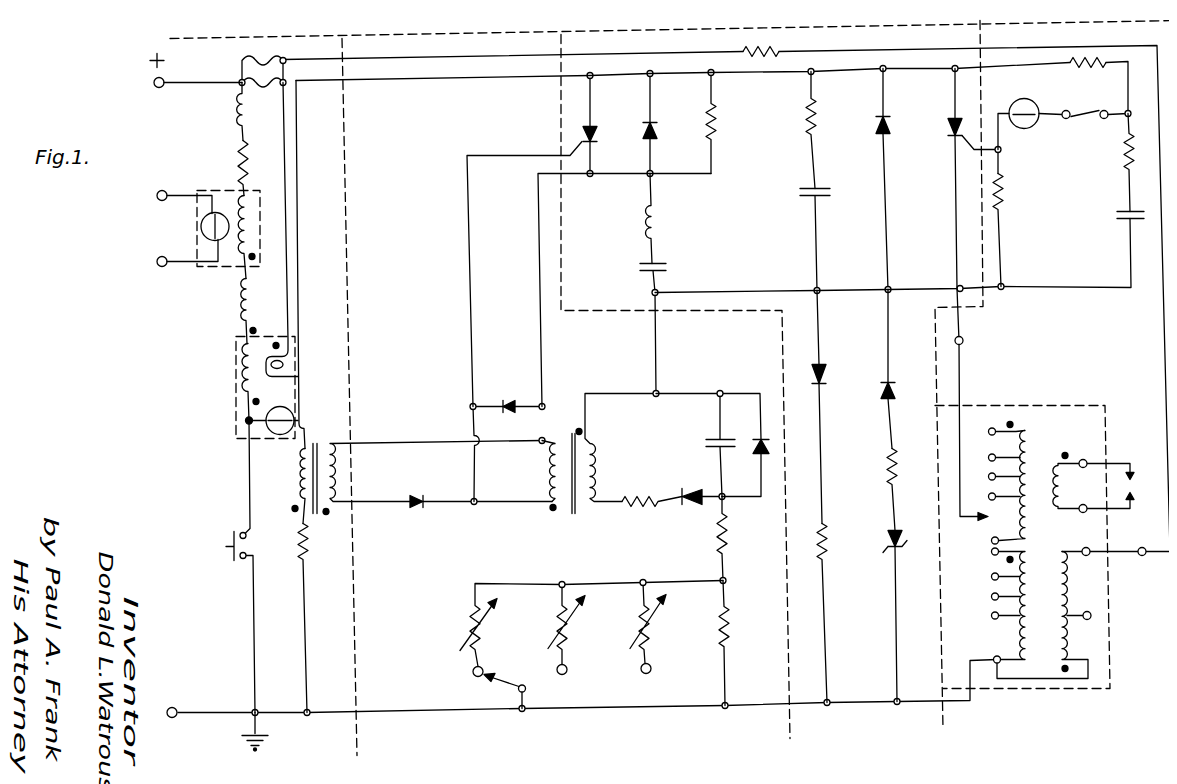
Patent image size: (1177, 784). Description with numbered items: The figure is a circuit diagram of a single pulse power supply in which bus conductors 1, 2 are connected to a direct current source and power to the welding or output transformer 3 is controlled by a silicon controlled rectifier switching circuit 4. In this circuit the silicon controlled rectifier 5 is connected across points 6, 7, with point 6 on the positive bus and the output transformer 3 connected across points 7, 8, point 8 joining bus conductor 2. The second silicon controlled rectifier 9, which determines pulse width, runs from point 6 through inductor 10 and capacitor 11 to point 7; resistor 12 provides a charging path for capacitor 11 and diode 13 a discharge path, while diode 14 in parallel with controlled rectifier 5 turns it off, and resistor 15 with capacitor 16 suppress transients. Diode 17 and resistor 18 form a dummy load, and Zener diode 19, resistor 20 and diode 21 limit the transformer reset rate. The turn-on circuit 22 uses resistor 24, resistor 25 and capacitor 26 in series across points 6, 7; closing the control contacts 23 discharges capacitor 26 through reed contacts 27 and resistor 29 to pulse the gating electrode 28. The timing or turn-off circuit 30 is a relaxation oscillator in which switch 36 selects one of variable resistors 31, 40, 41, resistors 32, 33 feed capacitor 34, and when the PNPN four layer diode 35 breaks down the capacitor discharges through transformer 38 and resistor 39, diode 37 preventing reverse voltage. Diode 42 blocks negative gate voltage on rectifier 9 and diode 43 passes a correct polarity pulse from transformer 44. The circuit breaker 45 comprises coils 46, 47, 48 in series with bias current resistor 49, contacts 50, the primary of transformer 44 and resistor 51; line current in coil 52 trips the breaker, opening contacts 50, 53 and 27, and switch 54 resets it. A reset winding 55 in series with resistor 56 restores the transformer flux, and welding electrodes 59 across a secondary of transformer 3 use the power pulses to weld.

The bus conductor 1 is at (153, 81).
The bus conductor 2 is at (177, 710).
The output transformer 3 is at (1032, 407).
The silicon controlled rectifier switching circuit 4 is at (688, 30).
The silicon controlled rectifier 5 is at (950, 134).
The point 6 is at (952, 68).
The point 7 is at (886, 289).
The point 8 is at (994, 658).
The second silicon controlled rectifier 9 is at (597, 139).
The inductor 10 is at (662, 225).
The capacitor 11 is at (668, 268).
The resistor 12 is at (720, 118).
The diode 13 is at (658, 129).
The diode 14 is at (878, 127).
The resistor 15 is at (820, 132).
The capacitor 16 is at (796, 197).
The diode 17 is at (827, 379).
The resistor 18 is at (832, 546).
The Zener diode 19 is at (905, 555).
The resistor 20 is at (885, 472).
The diode 21 is at (883, 392).
The turn-on circuit 22 is at (1082, 22).
The control contacts 23 is at (1092, 121).
The resistor 24 is at (1092, 75).
The resistor 25 is at (1122, 149).
The capacitor 26 is at (1119, 218).
The contacts 27 is at (1025, 131).
The gating electrode 28 is at (972, 156).
The resistor 29 is at (1008, 192).
The timing or turn-off circuit 30 is at (447, 35).
The variable resistor 31 is at (468, 627).
The resistor 32 is at (730, 625).
The resistor 33 is at (729, 545).
The capacitor 34 is at (706, 444).
The PNPN four layer diode 35 is at (689, 512).
The switch 36 is at (527, 692).
The diode 37 is at (759, 440).
The transformer 38 is at (574, 516).
The resistor 39 is at (641, 495).
The variable resistor 40 is at (553, 625).
The variable resistor 41 is at (640, 628).
The diode 42 is at (509, 400).
The diode 43 is at (415, 510).
The transformer 44 is at (318, 447).
The circuit breaker 45 is at (290, 38).
The coil 46 is at (240, 372).
The coil 47 is at (244, 300).
The coil 48 is at (250, 216).
The bias current resistor 49 is at (238, 161).
The contacts 50 is at (276, 436).
The resistor 51 is at (308, 542).
The glass reed switch coil 52 is at (286, 381).
The contacts 53 is at (197, 229).
The switch 54 is at (232, 548).
The reset winding 55 is at (1093, 588).
The resistor 56 is at (775, 57).
The welding electrodes 59 is at (1133, 482).